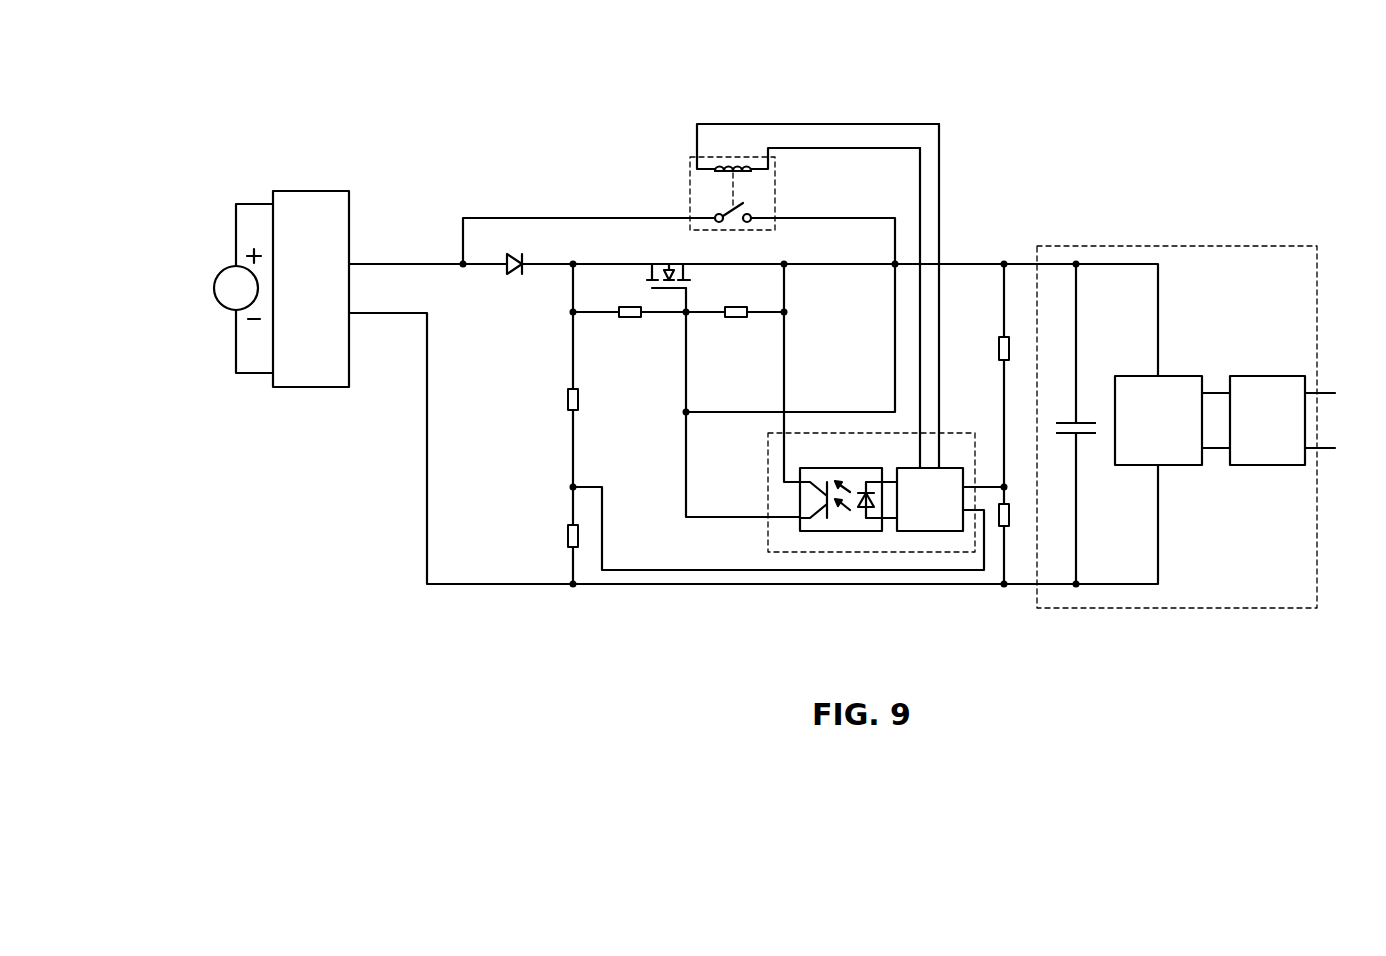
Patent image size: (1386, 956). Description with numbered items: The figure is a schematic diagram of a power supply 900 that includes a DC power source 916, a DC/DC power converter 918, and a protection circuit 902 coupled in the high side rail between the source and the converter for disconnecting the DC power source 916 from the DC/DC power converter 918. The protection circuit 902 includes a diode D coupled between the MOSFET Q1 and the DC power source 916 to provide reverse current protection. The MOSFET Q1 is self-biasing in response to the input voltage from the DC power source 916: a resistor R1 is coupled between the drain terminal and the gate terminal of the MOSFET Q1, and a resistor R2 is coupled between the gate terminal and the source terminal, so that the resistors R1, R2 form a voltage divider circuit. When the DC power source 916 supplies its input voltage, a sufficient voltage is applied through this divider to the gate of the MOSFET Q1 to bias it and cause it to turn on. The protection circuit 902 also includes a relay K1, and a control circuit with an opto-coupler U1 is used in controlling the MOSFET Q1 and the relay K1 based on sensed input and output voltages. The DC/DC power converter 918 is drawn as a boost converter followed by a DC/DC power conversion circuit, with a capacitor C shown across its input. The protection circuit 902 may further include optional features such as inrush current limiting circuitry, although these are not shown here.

The power supply 900 is at (268, 106).
The DC power source 916 is at (215, 289).
The protection circuit 902 is at (540, 348).
The DC/DC power converter 918 is at (1113, 245).
The diode D is at (515, 281).
The MOSFET Q1 is at (664, 257).
The resistor R1 is at (622, 295).
The resistor R2 is at (735, 295).
The relay K1 is at (792, 177).
The opto-coupler U1 is at (871, 492).
The capacitor C is at (1079, 444).